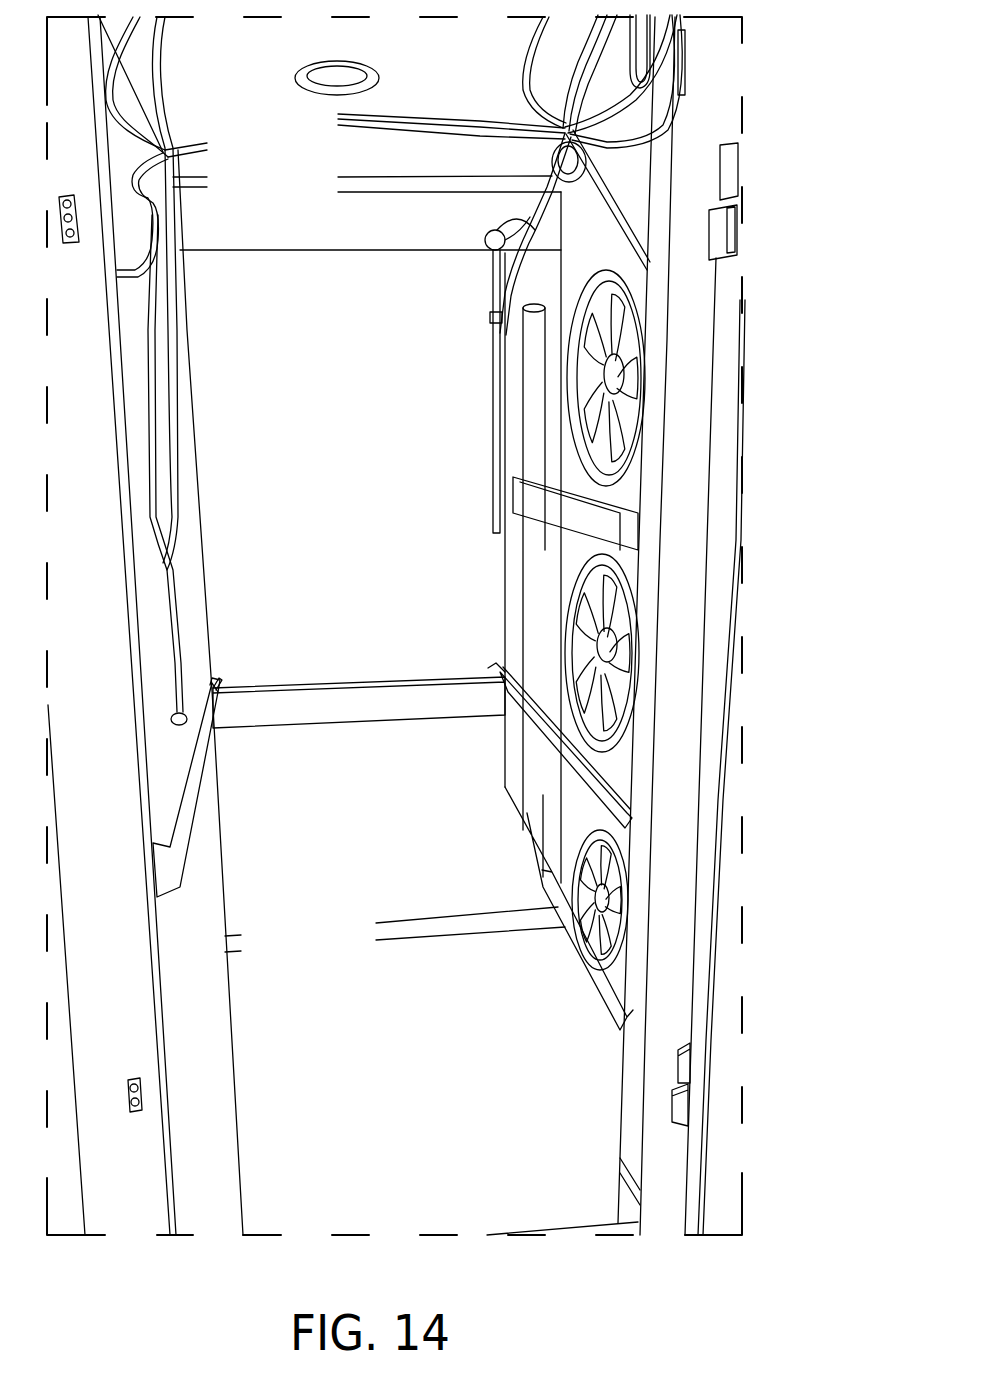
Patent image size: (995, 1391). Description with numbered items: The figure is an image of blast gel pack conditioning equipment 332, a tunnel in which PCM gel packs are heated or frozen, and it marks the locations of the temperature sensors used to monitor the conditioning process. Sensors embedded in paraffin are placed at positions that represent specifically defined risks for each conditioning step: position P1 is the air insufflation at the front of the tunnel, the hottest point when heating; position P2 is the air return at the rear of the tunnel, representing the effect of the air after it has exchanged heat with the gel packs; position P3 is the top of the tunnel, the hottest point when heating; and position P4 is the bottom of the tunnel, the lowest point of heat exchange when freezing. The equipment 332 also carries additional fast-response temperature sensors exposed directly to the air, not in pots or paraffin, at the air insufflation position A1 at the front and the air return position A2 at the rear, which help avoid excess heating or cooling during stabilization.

The blast gel pack conditioning equipment 332 is at (680, 317).
The air insufflation sensor position P1 is at (427, 391).
The air insufflation fast-response sensor position A1 is at (448, 567).
The air return sensor position P2 is at (671, 653).
The air return fast-response sensor position A2 is at (675, 826).
The top sensor position P3 is at (365, 167).
The bottom sensor position P4 is at (395, 901).